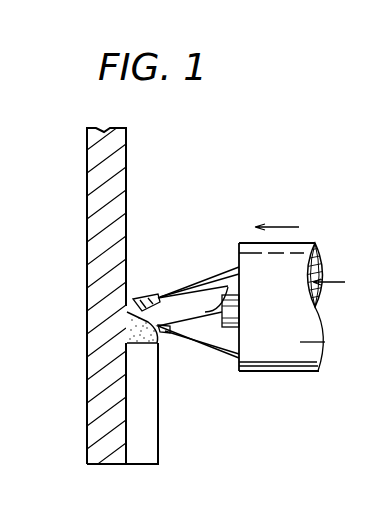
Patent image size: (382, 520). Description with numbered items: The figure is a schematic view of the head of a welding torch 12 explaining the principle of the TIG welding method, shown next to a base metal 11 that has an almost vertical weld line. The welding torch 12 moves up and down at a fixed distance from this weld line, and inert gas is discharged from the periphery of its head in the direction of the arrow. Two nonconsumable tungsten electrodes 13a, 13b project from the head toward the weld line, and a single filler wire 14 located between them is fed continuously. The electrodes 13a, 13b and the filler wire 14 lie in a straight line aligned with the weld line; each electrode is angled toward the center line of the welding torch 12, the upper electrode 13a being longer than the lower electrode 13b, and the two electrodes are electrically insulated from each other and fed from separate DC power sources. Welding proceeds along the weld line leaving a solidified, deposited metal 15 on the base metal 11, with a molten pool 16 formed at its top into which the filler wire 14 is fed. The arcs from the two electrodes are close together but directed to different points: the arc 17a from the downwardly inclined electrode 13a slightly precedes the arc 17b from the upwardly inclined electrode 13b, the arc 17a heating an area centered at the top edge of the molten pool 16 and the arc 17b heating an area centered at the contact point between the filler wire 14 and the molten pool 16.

The base metal 11 is at (125, 148).
The welding torch 12 is at (276, 372).
The upper electrode 13a is at (210, 278).
The lower electrode 13b is at (239, 343).
The filler wire 14 is at (240, 297).
The deposited metal 15 is at (152, 448).
The molten pool 16 is at (130, 327).
The arc from upper electrode 17a is at (134, 296).
The arc from lower electrode 17b is at (164, 334).